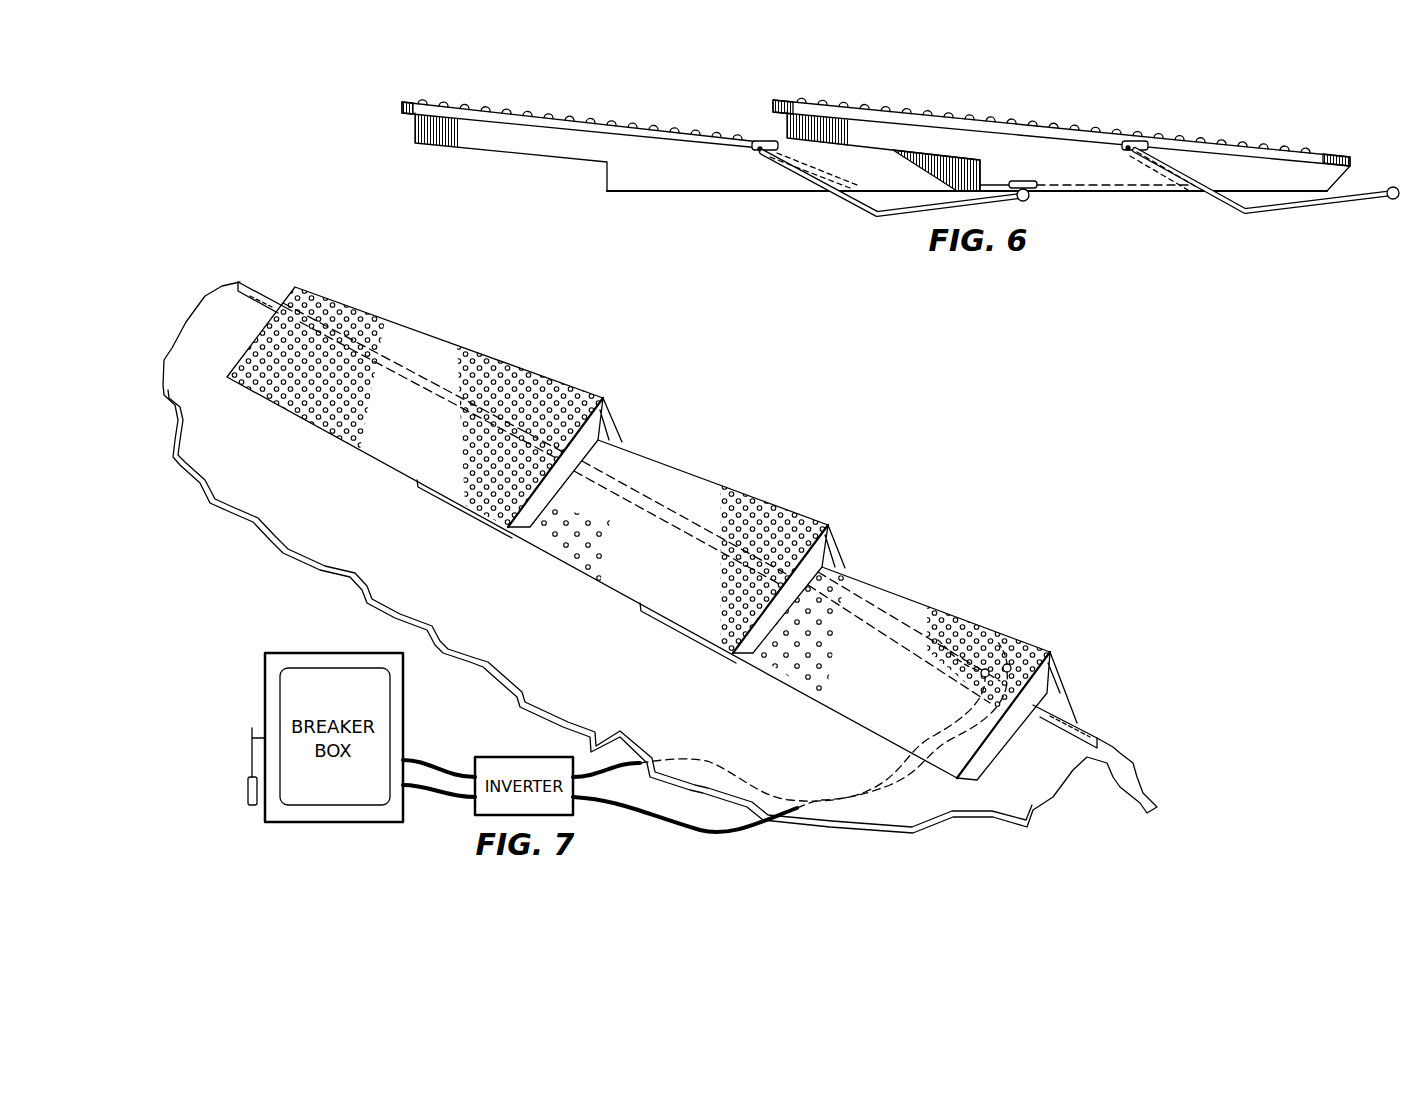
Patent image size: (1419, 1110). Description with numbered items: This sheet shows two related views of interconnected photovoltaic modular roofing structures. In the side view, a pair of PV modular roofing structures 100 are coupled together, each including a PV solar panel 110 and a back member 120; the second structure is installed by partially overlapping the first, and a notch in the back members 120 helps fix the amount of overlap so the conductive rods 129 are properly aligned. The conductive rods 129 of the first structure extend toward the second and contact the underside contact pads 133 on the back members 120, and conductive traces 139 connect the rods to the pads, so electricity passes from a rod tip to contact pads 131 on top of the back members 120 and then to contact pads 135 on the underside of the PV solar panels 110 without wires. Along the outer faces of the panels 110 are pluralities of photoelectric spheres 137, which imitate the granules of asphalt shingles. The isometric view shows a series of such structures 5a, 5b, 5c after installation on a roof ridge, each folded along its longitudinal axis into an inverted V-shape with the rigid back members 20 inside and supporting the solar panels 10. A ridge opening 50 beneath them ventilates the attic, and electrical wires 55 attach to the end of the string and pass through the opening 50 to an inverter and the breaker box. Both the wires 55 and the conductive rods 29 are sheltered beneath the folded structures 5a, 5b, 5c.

In FIG. 6, the PV modular roofing structure 100 is at (573, 170).
In FIG. 6, the PV solar panel 110 is at (401, 103).
In FIG. 6, the back member 120 is at (660, 192).
In FIG. 6, the conductive rod 129 is at (860, 205).
In FIG. 6, the contact pad 131 is at (757, 149).
In FIG. 6, the underside contact pad 133 is at (1020, 181).
In FIG. 6, the contact pad 135 is at (765, 140).
In FIG. 6, the photoelectric sphere 137 is at (494, 106).
In FIG. 6, the conductive trace 139 is at (1150, 184).
In FIG. 7, the PV modular roofing structure 5a is at (966, 597).
In FIG. 7, the PV modular roofing structure 5b is at (757, 474).
In FIG. 7, the PV modular roofing structure 5c is at (550, 358).
In FIG. 7, the solar panel 10 is at (446, 351).
In FIG. 7, the back member 20 is at (608, 434).
In FIG. 7, the conductive rod 29 is at (984, 660).
In FIG. 7, the ridge opening 50 is at (230, 278).
In FIG. 7, the electrical wire 55 is at (710, 760).